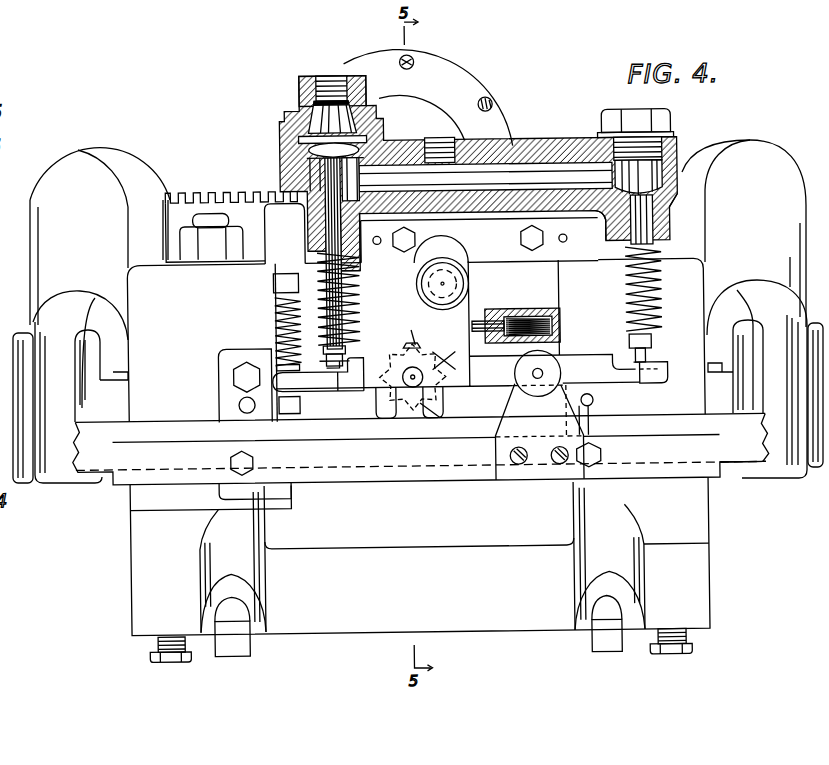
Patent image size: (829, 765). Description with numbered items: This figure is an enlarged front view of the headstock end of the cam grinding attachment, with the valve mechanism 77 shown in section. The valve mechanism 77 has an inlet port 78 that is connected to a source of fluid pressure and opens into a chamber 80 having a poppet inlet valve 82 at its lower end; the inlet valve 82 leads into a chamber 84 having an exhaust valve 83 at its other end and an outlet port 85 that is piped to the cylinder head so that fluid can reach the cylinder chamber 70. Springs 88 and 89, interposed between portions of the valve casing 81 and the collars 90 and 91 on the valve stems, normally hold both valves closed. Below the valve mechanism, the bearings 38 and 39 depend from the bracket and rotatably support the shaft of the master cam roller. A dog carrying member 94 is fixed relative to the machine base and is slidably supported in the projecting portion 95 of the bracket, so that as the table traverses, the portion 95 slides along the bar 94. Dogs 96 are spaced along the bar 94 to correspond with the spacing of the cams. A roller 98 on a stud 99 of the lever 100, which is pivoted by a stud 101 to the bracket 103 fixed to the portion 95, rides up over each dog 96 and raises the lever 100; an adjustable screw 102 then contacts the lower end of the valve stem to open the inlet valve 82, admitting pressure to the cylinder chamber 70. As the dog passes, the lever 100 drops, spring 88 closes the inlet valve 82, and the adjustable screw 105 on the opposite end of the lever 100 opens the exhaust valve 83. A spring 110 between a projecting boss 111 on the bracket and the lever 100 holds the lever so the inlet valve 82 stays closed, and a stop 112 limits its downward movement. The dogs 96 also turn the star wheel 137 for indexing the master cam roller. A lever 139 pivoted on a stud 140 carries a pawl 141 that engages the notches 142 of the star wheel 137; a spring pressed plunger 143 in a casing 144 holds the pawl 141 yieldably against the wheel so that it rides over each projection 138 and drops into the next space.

The bearing 38 is at (790, 460).
The bearing 39 is at (57, 467).
The cylinder chamber 70 is at (610, 231).
The valve mechanism 77 is at (523, 142).
The inlet port 78 is at (338, 75).
The chamber 80 is at (304, 98).
The valve casing 81 is at (328, 175).
The inlet valve 82 is at (318, 148).
The exhaust valve 83 is at (662, 198).
The chamber 84 is at (556, 182).
The outlet port 85 is at (444, 141).
The spring 88 is at (318, 280).
The spring 89 is at (663, 302).
The collar 90 is at (364, 342).
The collar 91 is at (628, 338).
The dog carrying member 94 is at (729, 445).
The projecting portion 95 is at (301, 466).
The dogs 96 is at (376, 403).
The roller 98 is at (398, 415).
The stud 99 is at (360, 362).
The lever 100 is at (317, 390).
The stud 101 is at (672, 213).
The adjustable screw 102 is at (340, 390).
The bracket 103 is at (536, 472).
The adjustable screw 105 is at (640, 368).
The spring 110 is at (276, 321).
The projecting boss 111 is at (275, 281).
The stop 112 is at (287, 412).
The star wheel 137 is at (416, 345).
The projection 138 is at (420, 418).
The lever 139 is at (461, 313).
The stud 140 is at (448, 283).
The pawl 141 is at (453, 375).
The notches 142 is at (426, 408).
The spring pressed plunger 143 is at (514, 313).
The casing 144 is at (555, 312).